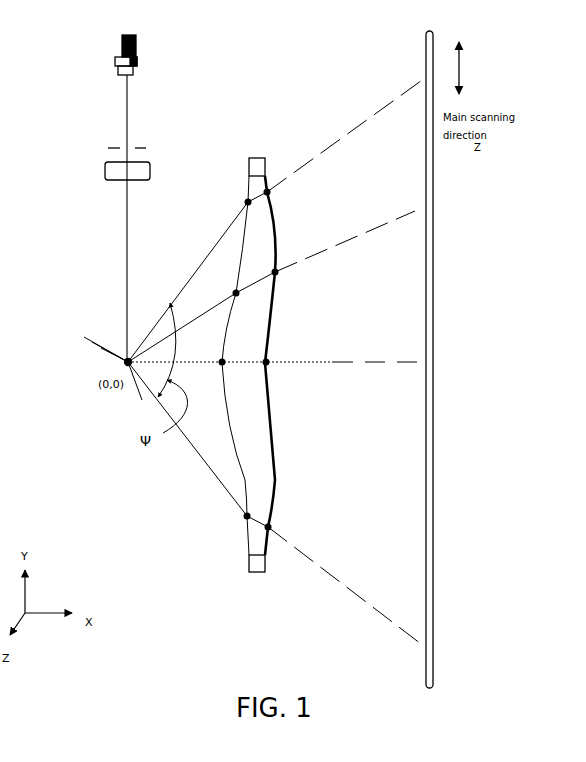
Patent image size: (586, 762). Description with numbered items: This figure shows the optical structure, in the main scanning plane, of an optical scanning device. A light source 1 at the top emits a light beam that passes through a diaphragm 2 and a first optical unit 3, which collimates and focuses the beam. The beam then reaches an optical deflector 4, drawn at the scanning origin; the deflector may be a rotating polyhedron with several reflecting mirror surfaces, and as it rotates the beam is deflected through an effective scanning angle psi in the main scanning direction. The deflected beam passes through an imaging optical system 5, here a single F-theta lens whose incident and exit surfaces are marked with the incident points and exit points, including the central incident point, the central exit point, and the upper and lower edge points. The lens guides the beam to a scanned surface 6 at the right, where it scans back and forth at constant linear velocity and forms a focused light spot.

The light source 1 is at (114, 62).
The diaphragm 2 is at (146, 148).
The first optical unit 3 is at (105, 178).
The optical deflector 4 is at (127, 362).
The imaging optical system 5 is at (277, 463).
The scanned surface 6 is at (434, 551).